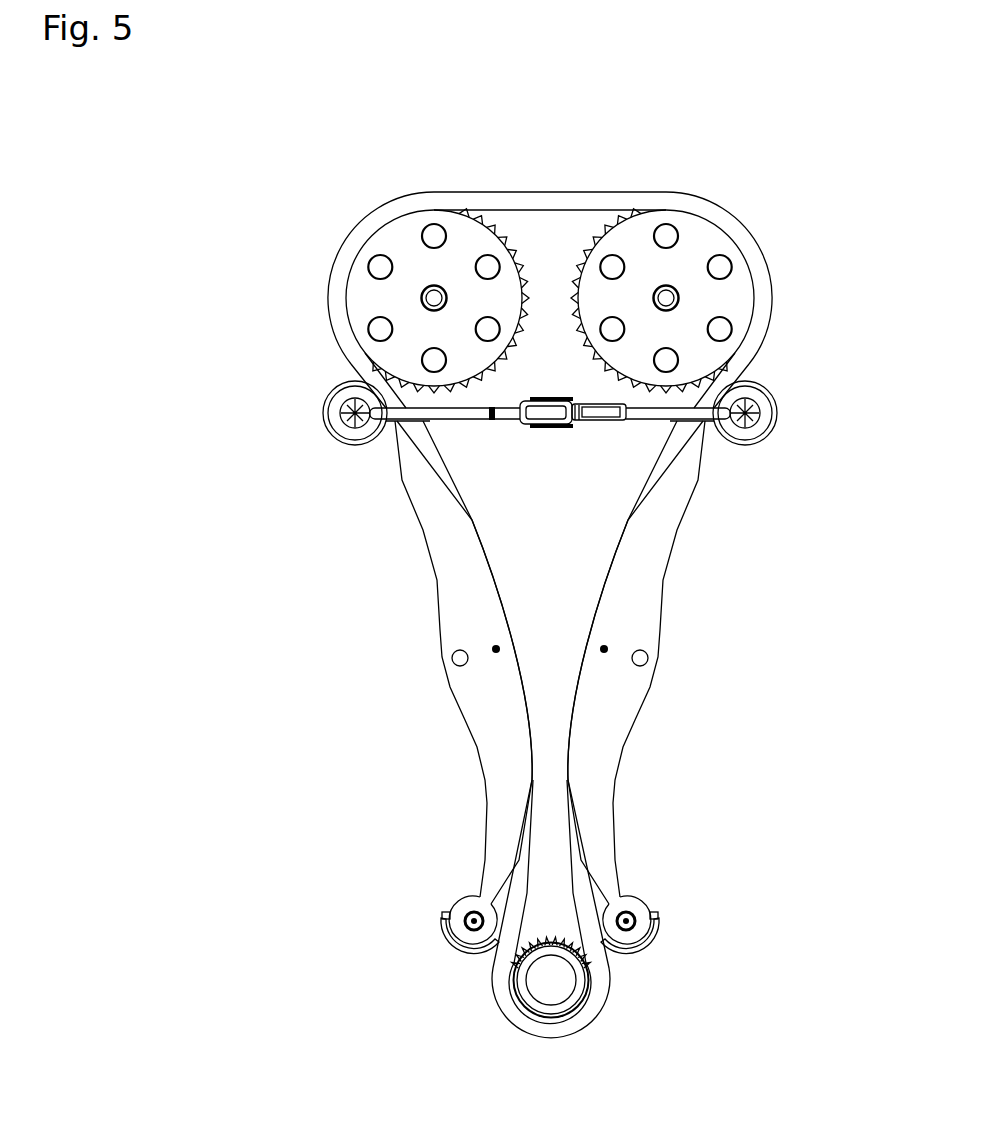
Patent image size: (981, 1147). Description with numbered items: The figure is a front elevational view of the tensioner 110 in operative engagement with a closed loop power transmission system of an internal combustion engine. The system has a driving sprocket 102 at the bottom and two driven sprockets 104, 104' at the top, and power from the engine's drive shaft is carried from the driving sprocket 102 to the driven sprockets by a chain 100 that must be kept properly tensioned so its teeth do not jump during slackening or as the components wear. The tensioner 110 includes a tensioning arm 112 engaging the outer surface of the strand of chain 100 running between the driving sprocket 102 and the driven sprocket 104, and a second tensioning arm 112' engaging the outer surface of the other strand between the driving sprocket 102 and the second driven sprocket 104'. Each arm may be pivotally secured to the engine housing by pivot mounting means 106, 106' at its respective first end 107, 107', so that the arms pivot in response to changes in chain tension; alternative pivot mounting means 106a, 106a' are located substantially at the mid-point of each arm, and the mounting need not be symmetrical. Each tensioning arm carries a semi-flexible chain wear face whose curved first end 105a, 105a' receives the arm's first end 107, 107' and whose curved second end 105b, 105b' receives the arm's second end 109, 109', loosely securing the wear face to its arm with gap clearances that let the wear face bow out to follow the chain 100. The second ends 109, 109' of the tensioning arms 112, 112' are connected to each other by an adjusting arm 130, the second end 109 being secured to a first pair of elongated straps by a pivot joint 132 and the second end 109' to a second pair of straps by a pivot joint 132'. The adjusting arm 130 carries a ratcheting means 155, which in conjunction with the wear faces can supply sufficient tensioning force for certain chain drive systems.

The chain 100 is at (757, 298).
The driving sprocket 102 is at (550, 975).
The driven sprocket 104 is at (671, 273).
The second driven sprocket 104' is at (387, 301).
The first end of chain wear face 105a is at (682, 951).
The first end of chain wear face 105a' is at (447, 962).
The second end of chain wear face 105b is at (776, 406).
The second end of chain wear face 105b' is at (326, 411).
The pivot mounting means 106 is at (684, 920).
The pivot mounting means 106' is at (416, 927).
The pivot mounting means 106a is at (702, 669).
The pivot mounting means 106a' is at (411, 666).
The first end of tensioning arm 107 is at (651, 908).
The first end of tensioning arm 107' is at (458, 908).
The second end of tensioning arm 109 is at (729, 456).
The second end of tensioning arm 109' is at (385, 463).
The tensioner 110 is at (572, 717).
The tensioning arm 112 is at (670, 705).
The second tensioning arm 112' is at (441, 717).
The adjusting arm 130 is at (490, 430).
The pivot joint 132 is at (787, 433).
The pivot joint 132' is at (322, 436).
The ratcheting means 155 is at (563, 440).